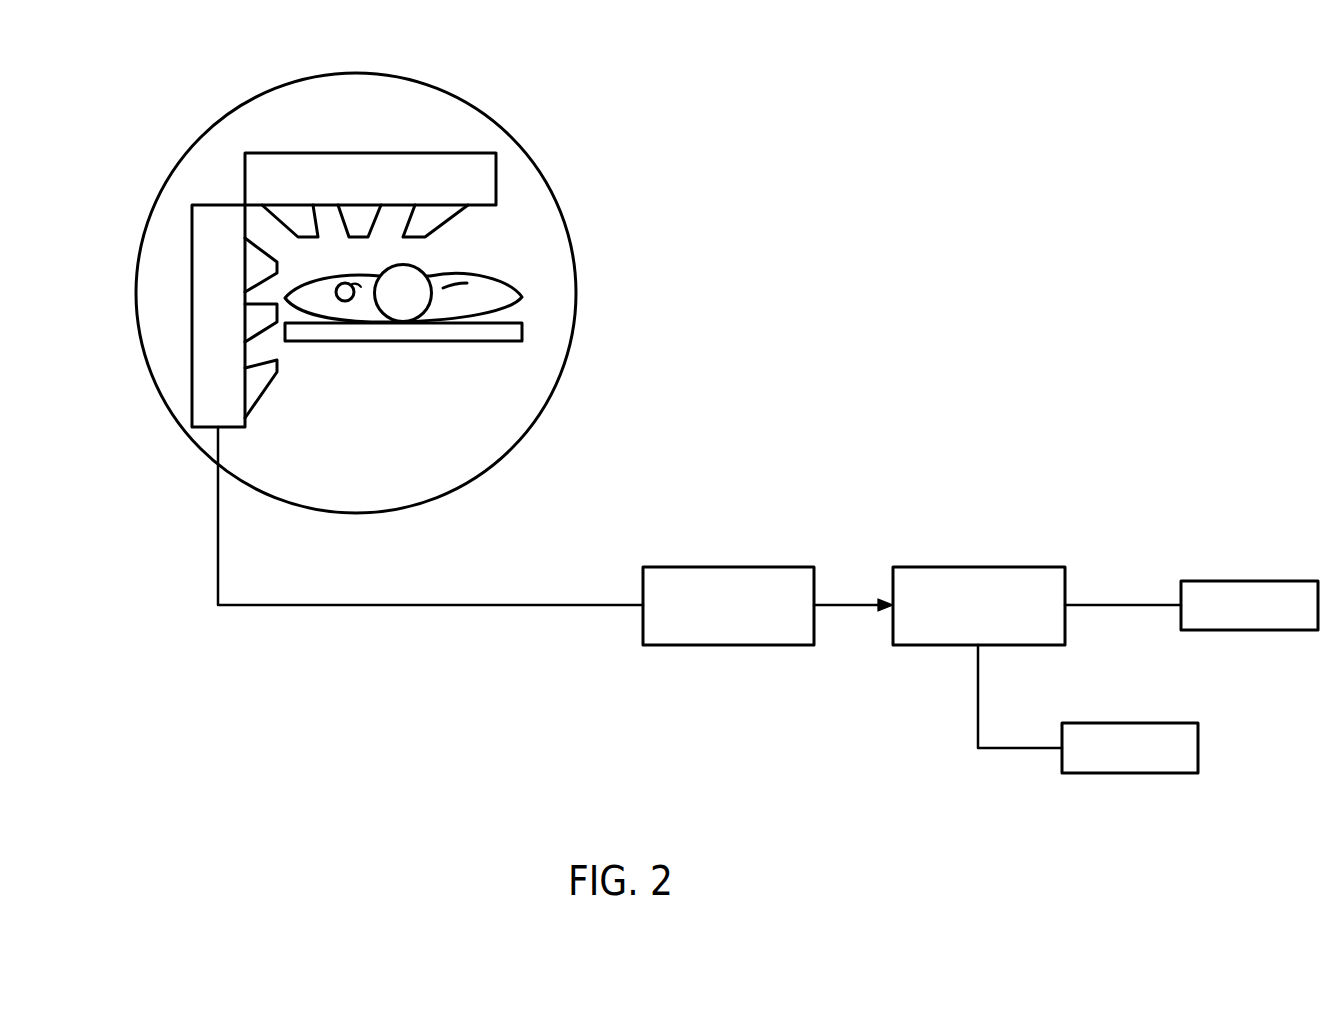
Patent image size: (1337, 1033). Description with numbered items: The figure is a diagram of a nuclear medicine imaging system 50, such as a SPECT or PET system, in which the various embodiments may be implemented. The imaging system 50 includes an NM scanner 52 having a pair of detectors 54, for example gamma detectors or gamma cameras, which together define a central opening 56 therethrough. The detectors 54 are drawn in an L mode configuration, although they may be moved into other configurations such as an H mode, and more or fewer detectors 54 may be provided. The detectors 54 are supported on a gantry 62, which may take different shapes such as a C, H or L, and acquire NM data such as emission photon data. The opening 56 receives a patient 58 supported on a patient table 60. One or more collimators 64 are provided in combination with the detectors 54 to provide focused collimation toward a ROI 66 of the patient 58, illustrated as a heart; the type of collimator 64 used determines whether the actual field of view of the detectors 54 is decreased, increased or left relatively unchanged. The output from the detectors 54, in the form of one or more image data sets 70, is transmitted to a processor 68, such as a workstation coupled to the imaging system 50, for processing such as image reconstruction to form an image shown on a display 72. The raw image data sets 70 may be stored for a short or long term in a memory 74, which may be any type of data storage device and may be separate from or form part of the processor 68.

The imaging system 50 is at (615, 65).
The NM scanner 52 is at (157, 440).
The detectors 54 is at (370, 152).
The central opening 56 is at (445, 397).
The patient 58 is at (507, 275).
The patient table 60 is at (490, 343).
The gantry 62 is at (505, 132).
The collimators 64 is at (292, 222).
The ROI 66 is at (347, 301).
The processor 68 is at (978, 567).
The image data sets 70 is at (730, 645).
The display 72 is at (1249, 581).
The memory 74 is at (1132, 773).